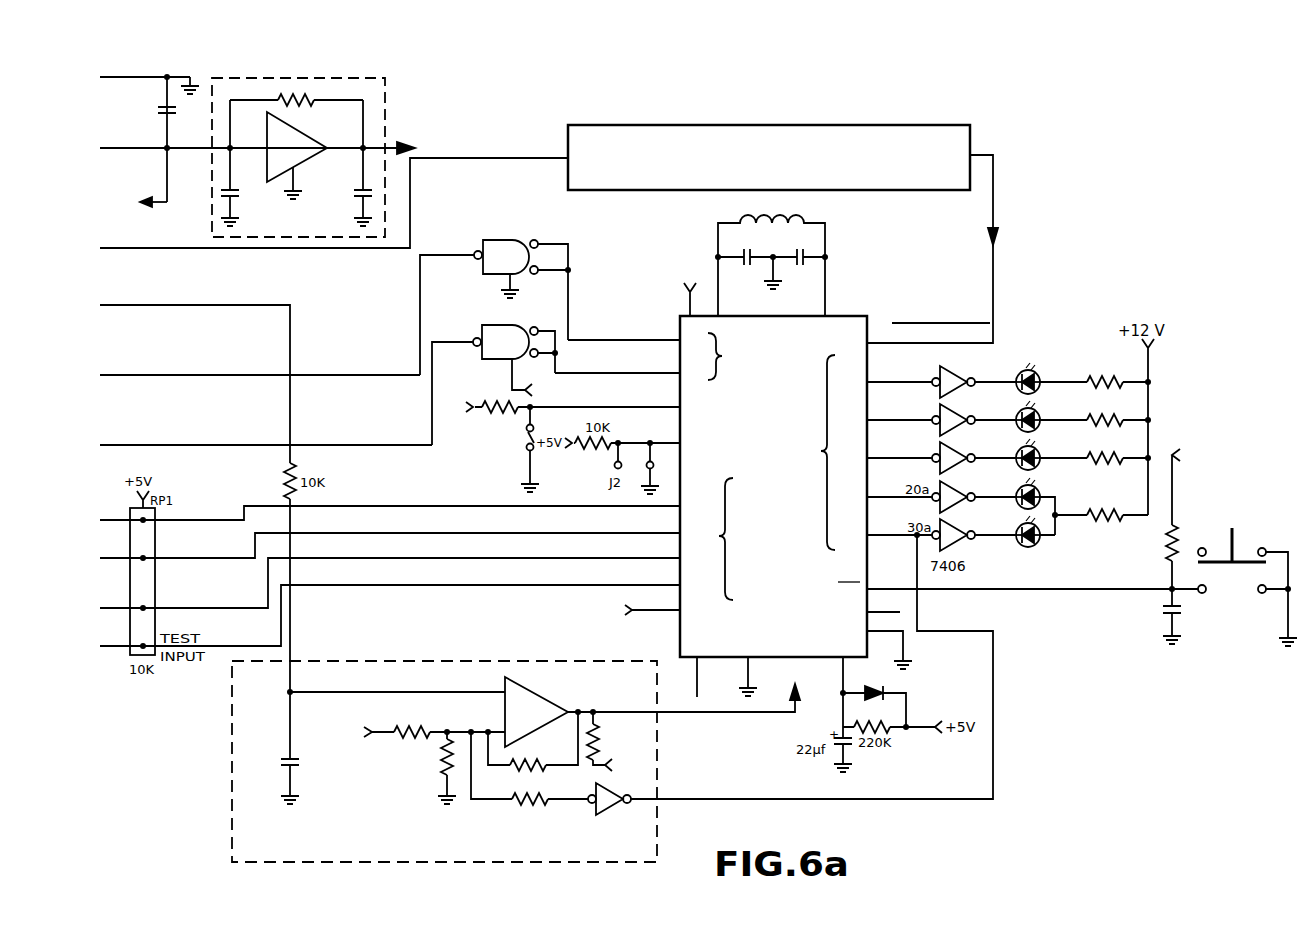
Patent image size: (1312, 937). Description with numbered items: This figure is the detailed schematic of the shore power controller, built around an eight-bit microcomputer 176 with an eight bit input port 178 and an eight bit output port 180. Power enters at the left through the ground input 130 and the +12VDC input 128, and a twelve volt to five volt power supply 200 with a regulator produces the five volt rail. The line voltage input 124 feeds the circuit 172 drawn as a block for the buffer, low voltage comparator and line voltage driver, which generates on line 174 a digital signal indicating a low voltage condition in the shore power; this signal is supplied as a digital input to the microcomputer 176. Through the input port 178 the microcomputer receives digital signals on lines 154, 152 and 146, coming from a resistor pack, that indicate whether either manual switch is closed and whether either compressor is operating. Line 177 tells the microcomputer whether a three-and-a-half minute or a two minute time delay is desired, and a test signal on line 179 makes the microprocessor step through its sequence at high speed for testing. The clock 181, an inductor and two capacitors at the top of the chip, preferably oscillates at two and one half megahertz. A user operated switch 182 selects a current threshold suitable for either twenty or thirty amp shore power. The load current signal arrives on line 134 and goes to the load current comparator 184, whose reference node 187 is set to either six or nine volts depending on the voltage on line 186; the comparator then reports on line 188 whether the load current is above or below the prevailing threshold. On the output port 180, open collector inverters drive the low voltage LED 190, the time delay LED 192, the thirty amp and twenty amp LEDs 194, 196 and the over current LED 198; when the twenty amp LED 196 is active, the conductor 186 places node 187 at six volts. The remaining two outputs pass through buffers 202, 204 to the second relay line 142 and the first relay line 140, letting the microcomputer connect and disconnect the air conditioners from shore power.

The line voltage input 124 is at (250, 248).
The +12VDC input 128 is at (126, 148).
The ground input 130 is at (128, 77).
The load current line 134 is at (250, 305).
The relay 1 line 140 is at (250, 445).
The relay 2 line 142 is at (250, 375).
The compressor current line 146 is at (112, 608).
The AC1 switch line 152 is at (110, 558).
The AC2 switch line 154 is at (118, 520).
The circuit 172 is at (942, 125).
The line 174 is at (995, 283).
The microcomputer 176 is at (750, 488).
The line 177 is at (598, 407).
The input port 178 is at (753, 539).
The line 179 is at (567, 585).
The output port 180 is at (771, 441).
The clock 181 is at (833, 283).
The switch 182 is at (1237, 548).
The load current comparator 184 is at (516, 761).
The line 186 is at (841, 665).
The node 187 is at (470, 726).
The line 188 is at (716, 714).
The low voltage LED 190 is at (1007, 381).
The time delay LED 192 is at (1007, 457).
The LED 194 is at (1007, 506).
The 20 amp LED 196 is at (961, 534).
The over current LED 198 is at (1007, 419).
The power supply 200 is at (385, 104).
The buffer 202 is at (490, 358).
The buffer 204 is at (491, 274).